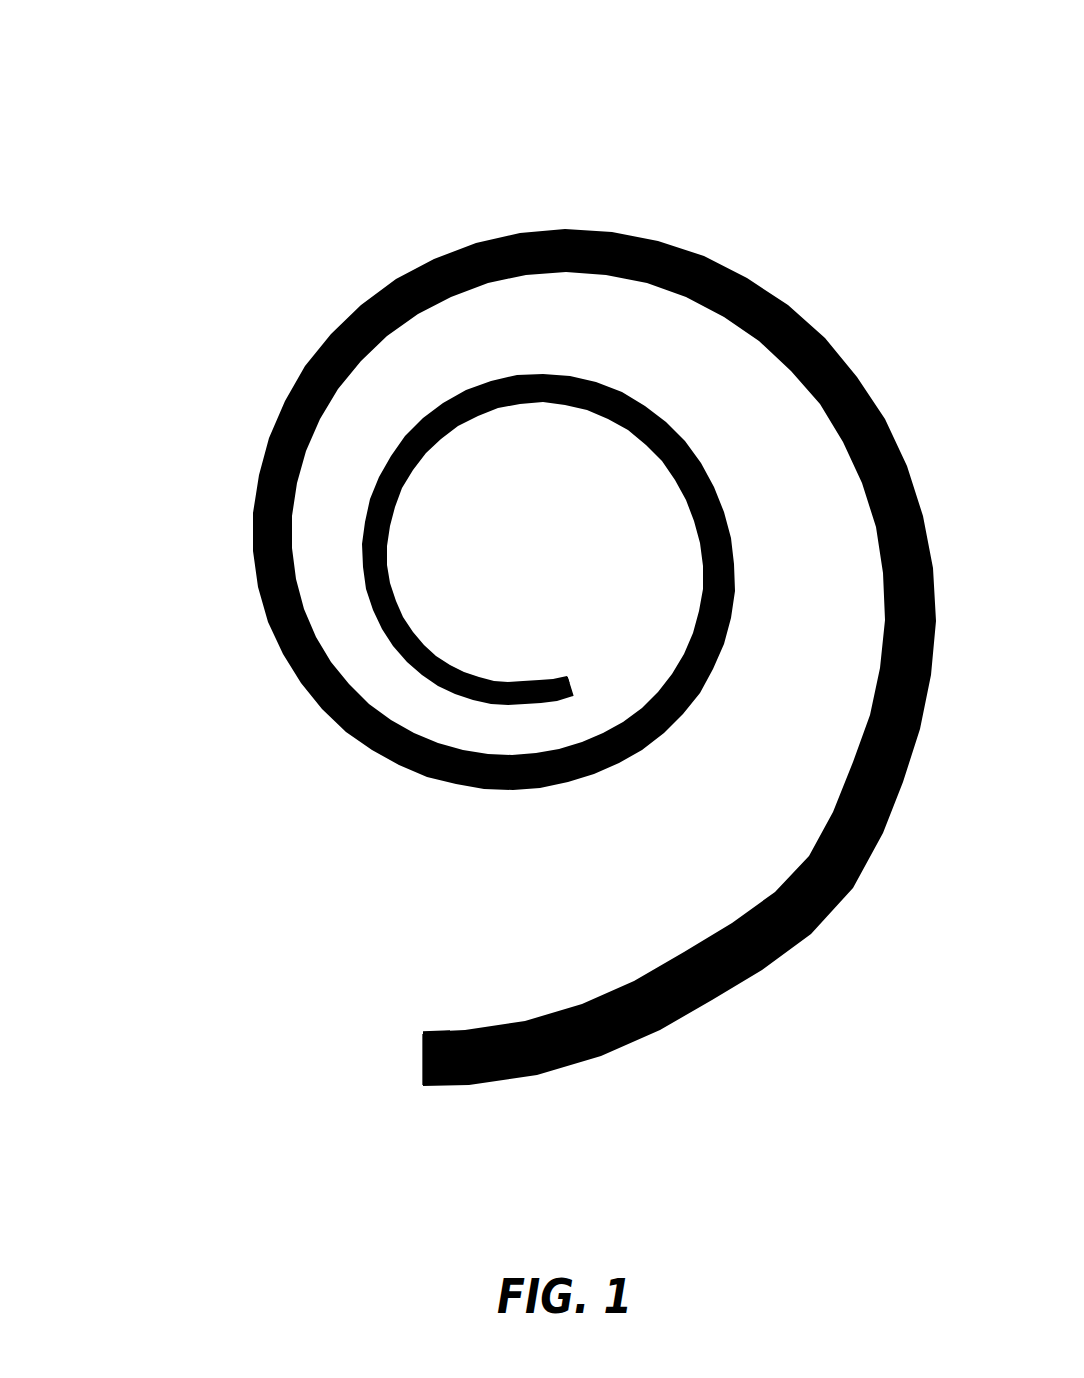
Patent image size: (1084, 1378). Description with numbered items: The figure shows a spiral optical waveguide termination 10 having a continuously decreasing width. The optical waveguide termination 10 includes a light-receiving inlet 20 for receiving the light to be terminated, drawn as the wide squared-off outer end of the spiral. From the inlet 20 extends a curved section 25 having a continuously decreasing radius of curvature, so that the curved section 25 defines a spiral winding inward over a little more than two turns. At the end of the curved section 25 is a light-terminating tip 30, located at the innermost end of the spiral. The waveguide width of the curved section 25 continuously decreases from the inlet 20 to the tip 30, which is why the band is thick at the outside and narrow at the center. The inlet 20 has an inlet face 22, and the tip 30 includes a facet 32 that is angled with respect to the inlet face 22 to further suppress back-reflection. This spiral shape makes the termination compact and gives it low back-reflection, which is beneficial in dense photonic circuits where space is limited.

The optical waveguide termination 10 is at (499, 543).
The curved section 25 is at (255, 494).
The light-receiving inlet 20 is at (372, 1055).
The inlet face 22 is at (423, 1036).
The light-terminating tip 30 is at (592, 676).
The facet 32 is at (568, 677).